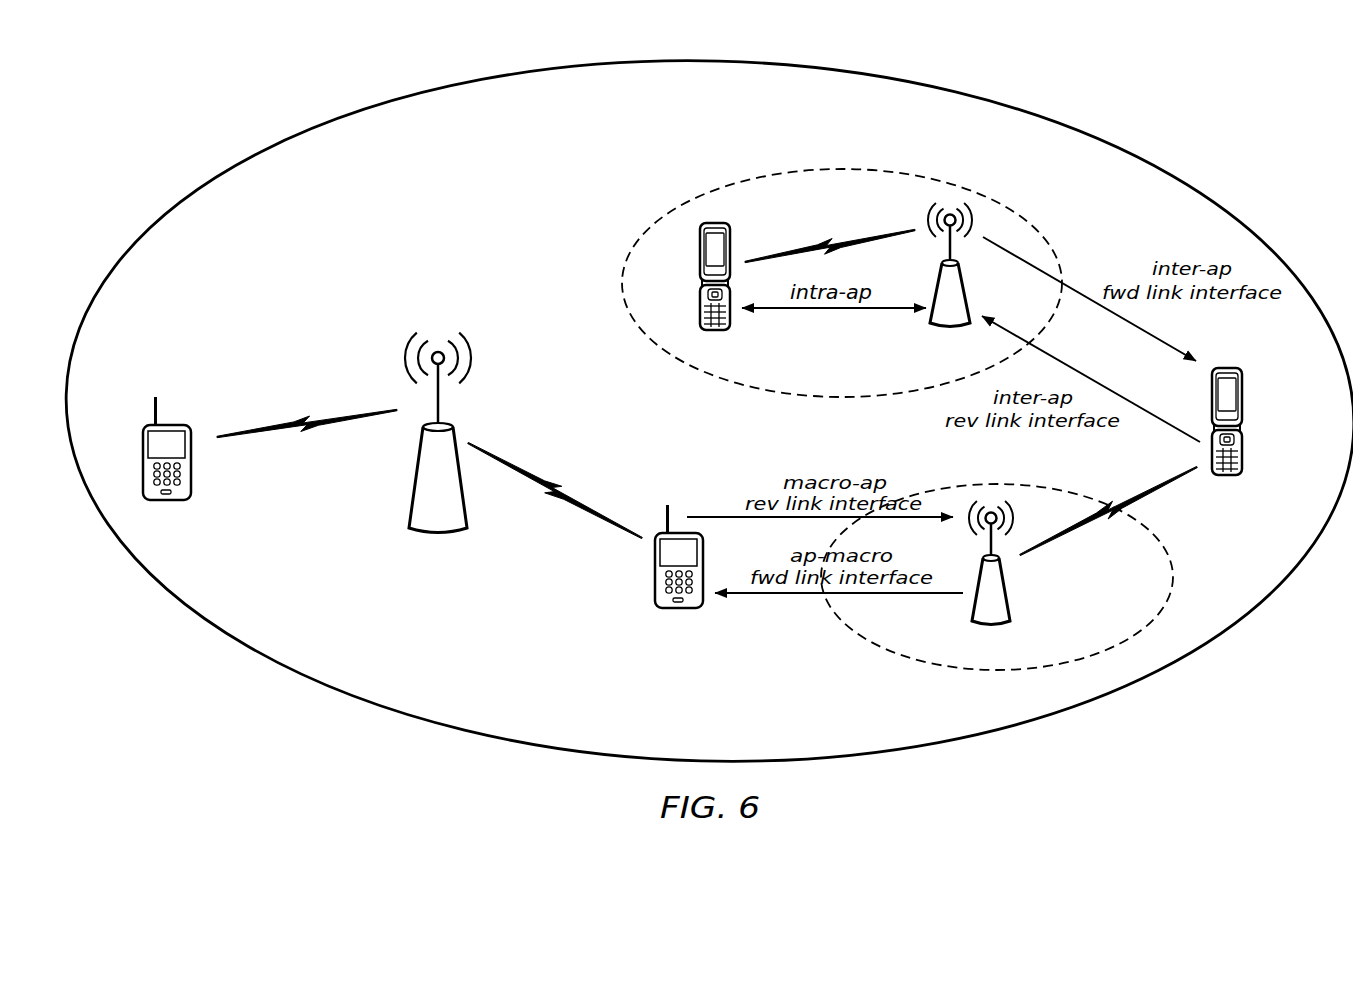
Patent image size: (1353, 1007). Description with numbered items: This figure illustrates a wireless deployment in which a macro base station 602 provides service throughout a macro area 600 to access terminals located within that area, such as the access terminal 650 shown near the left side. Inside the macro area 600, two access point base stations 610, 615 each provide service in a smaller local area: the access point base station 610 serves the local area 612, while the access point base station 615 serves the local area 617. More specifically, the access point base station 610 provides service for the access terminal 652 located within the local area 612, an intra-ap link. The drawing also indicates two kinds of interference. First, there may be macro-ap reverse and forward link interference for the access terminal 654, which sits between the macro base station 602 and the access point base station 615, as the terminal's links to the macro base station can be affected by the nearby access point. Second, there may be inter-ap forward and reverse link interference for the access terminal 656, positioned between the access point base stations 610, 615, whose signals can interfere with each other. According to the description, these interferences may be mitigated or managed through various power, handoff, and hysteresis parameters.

The macro area 600 is at (1090, 93).
The macro base station 602 is at (439, 351).
The access point base station 610 is at (950, 214).
The local area 612 is at (812, 162).
The access point base station 615 is at (991, 512).
The local area 617 is at (1183, 590).
The access terminal 650 is at (179, 423).
The access terminal 652 is at (713, 222).
The access terminal 654 is at (668, 503).
The access terminal 656 is at (1233, 367).